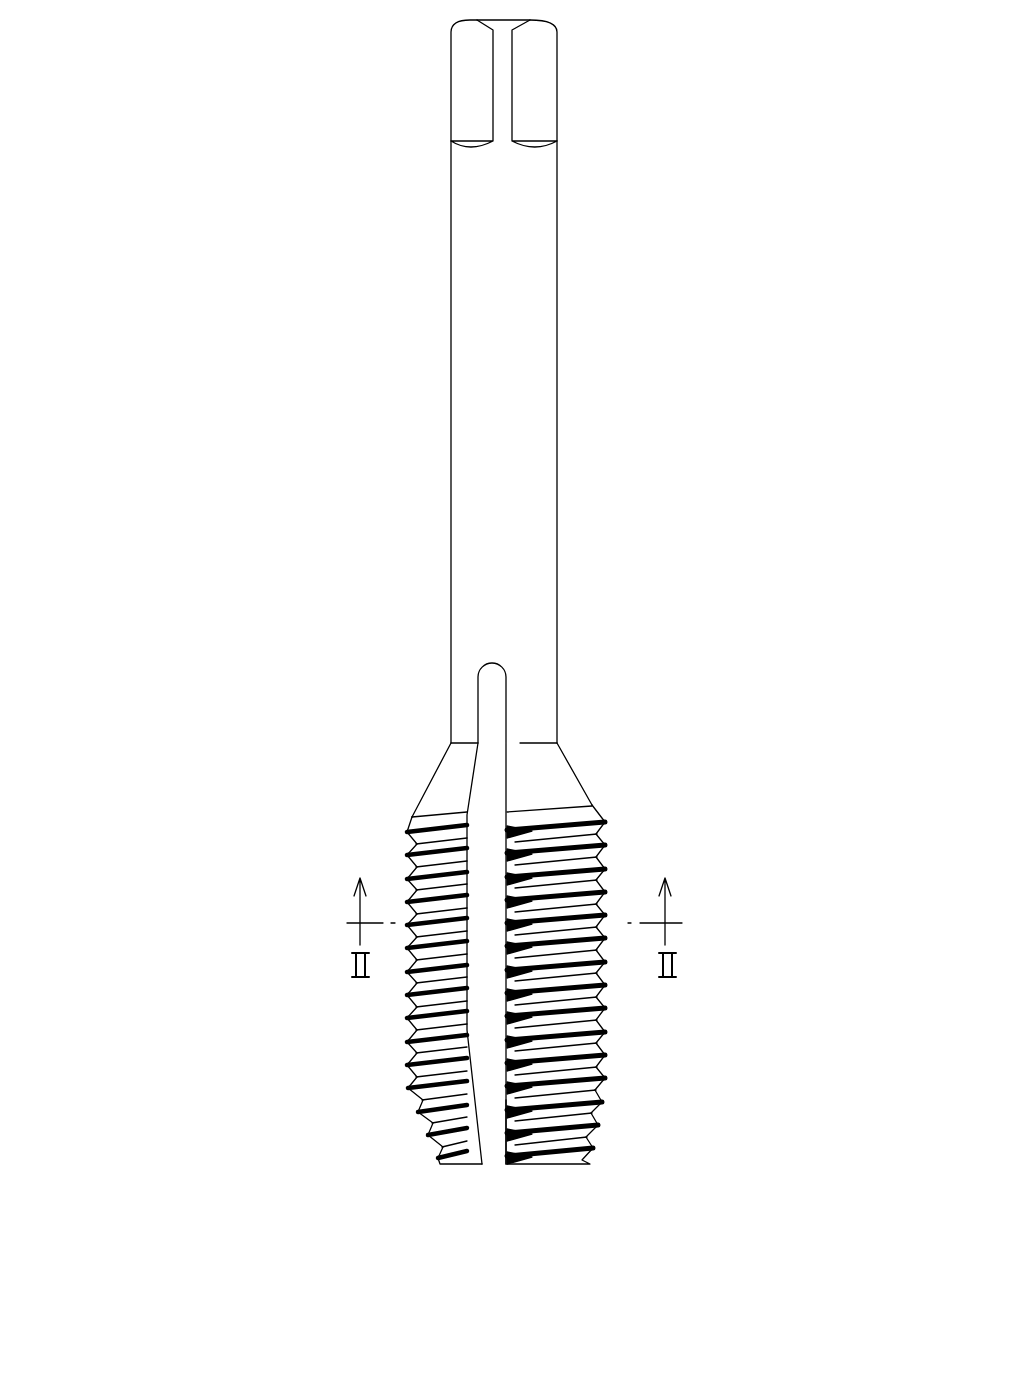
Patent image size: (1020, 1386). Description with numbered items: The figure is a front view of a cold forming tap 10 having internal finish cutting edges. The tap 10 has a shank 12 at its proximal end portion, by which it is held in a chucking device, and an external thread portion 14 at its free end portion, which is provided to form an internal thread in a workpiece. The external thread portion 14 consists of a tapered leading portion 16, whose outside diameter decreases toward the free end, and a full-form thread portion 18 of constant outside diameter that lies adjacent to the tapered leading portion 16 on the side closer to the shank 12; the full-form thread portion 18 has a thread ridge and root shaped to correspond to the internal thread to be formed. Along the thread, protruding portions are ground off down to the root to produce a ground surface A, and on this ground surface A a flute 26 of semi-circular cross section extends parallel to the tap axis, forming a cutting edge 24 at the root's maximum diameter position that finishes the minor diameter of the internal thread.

The cold forming tap 10 is at (710, 158).
The shank 12 is at (393, 226).
The external thread portion 14 is at (208, 1165).
The tapered leading portion 16 is at (352, 1085).
The full-form thread portion 18 is at (352, 1080).
The cutting edge 24 is at (508, 1101).
The flute 26 is at (483, 797).
The ground surface A is at (527, 813).